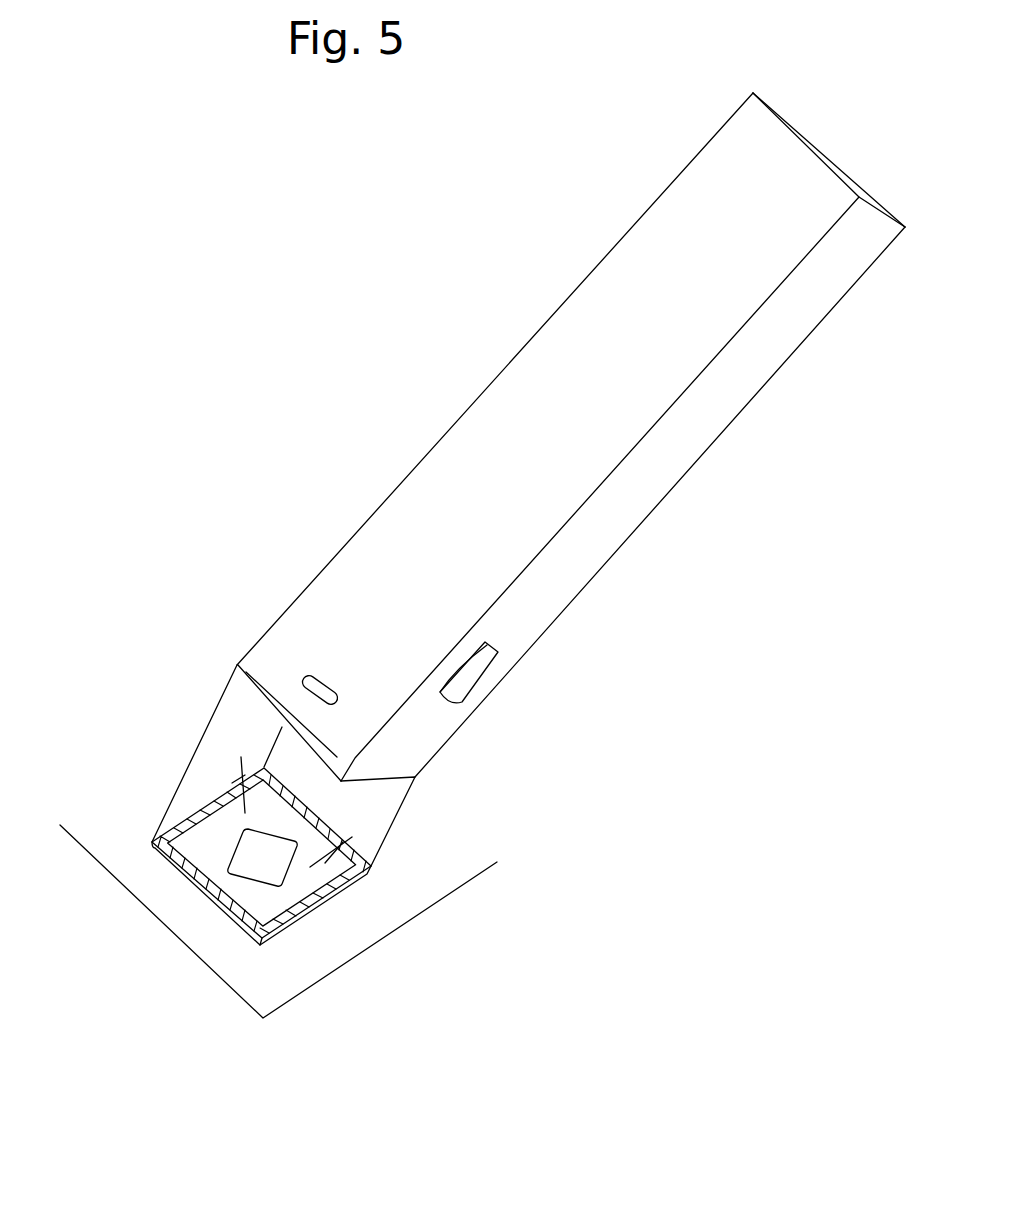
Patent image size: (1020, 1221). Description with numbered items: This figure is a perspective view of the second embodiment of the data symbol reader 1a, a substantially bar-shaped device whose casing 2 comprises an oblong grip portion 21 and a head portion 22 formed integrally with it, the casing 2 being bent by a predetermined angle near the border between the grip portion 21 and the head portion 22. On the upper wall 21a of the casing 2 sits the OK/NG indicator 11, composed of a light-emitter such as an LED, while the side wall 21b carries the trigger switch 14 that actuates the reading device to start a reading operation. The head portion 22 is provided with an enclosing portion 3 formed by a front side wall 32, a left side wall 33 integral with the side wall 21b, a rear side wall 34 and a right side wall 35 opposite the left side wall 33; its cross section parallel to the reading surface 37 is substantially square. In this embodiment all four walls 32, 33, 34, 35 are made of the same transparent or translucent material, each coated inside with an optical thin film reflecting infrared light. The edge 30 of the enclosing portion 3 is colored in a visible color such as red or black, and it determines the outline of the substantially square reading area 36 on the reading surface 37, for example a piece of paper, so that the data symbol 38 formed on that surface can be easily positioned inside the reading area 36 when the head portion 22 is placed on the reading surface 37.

The data symbol reader 1a is at (282, 228).
The casing 2 is at (512, 290).
The grip portion 21 is at (627, 275).
The upper wall 21a is at (638, 412).
The side wall 21b is at (605, 537).
The OK/NG indicator 11 is at (315, 680).
The trigger switch 14 is at (480, 684).
The enclosing portion 3 is at (373, 828).
The head portion 22 is at (368, 798).
The edge 30 is at (203, 893).
The front side wall 32 is at (198, 770).
The left side wall 33 is at (377, 812).
The rear side wall 34 is at (276, 755).
The right side wall 35 is at (201, 743).
The reading area 36 is at (188, 843).
The reading surface 37 is at (337, 952).
The data symbol 38 is at (257, 872).